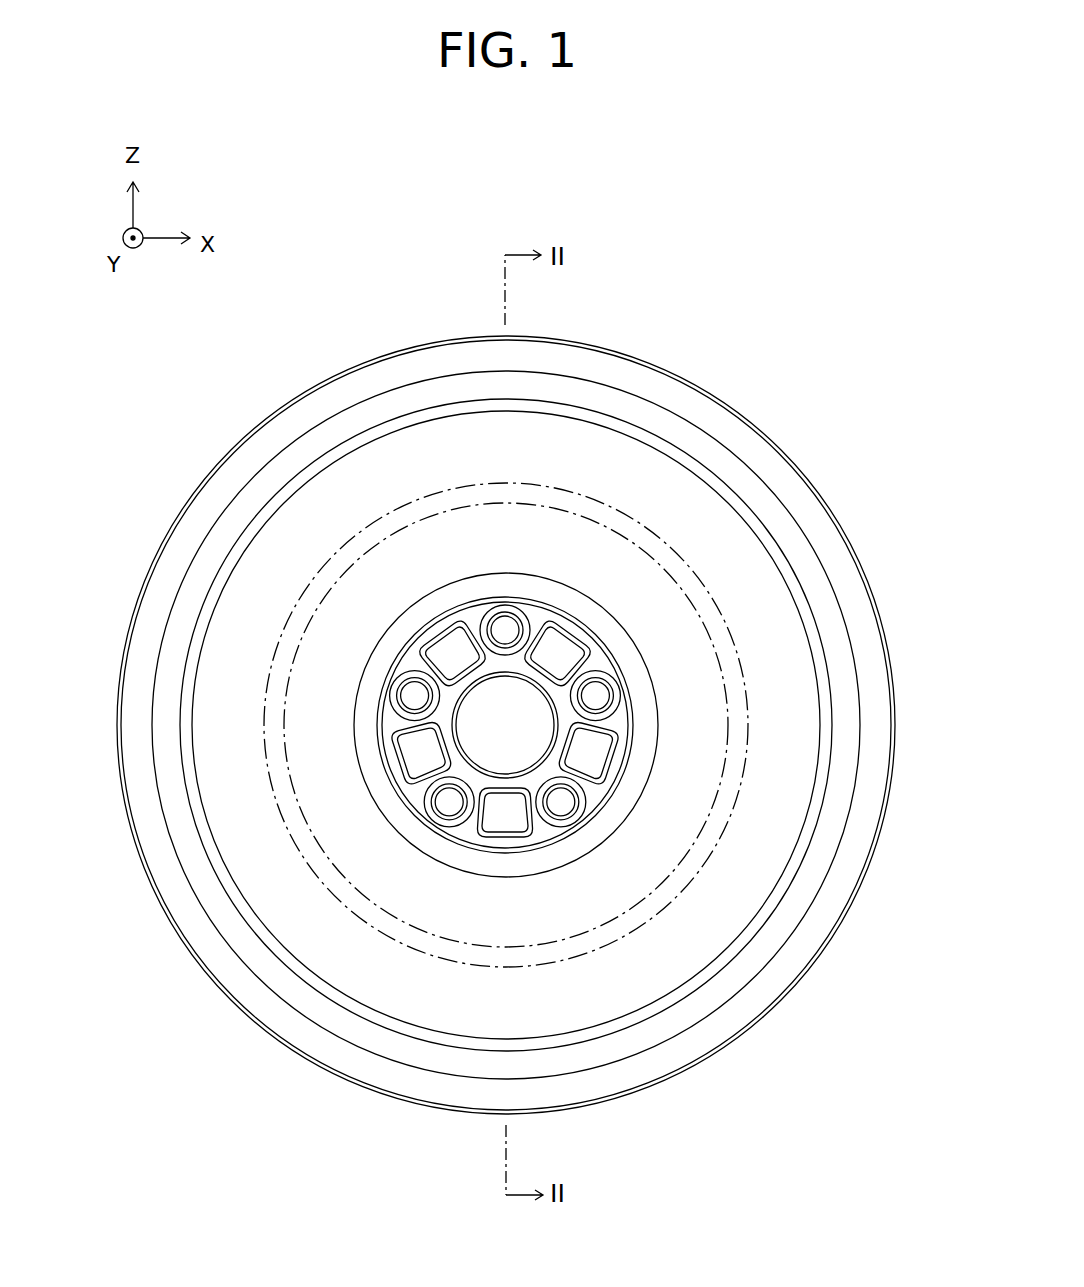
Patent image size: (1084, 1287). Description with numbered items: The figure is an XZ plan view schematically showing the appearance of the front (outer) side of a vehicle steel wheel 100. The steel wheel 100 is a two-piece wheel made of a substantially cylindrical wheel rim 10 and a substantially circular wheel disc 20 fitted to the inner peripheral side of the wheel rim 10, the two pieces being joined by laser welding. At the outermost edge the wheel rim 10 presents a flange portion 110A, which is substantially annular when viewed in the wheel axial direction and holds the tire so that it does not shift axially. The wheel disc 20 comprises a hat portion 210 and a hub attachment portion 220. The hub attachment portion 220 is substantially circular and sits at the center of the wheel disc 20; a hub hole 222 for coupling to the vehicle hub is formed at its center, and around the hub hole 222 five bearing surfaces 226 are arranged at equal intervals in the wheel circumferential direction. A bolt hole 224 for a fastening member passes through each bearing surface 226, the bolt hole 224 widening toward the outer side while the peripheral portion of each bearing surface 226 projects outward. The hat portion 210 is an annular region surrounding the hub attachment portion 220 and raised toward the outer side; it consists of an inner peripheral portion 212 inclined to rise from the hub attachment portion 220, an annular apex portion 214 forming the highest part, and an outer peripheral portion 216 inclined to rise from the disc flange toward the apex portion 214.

The steel wheel 100 is at (862, 406).
The wheel rim 10 is at (701, 368).
The flange portion 110A is at (447, 338).
The wheel disc 20 is at (728, 516).
The hat portion 210 is at (877, 1037).
The inner peripheral portion 212 is at (653, 830).
The apex portion 214 is at (637, 920).
The outer peripheral portion 216 is at (628, 988).
The hub attachment portion 220 is at (592, 755).
The hub hole 222 is at (527, 737).
The bolt hole 224 is at (452, 802).
The bearing surface 226 is at (600, 672).